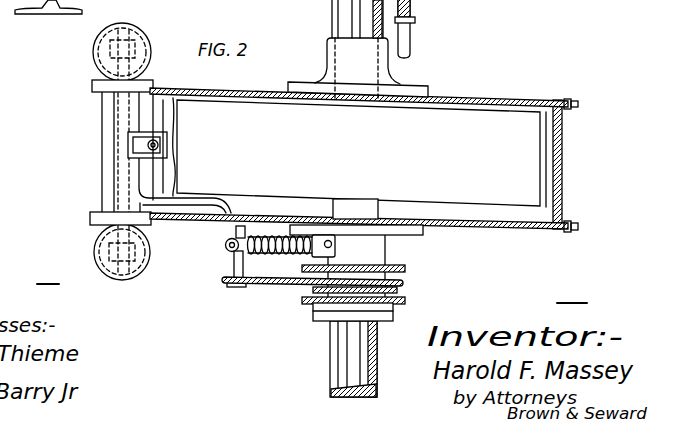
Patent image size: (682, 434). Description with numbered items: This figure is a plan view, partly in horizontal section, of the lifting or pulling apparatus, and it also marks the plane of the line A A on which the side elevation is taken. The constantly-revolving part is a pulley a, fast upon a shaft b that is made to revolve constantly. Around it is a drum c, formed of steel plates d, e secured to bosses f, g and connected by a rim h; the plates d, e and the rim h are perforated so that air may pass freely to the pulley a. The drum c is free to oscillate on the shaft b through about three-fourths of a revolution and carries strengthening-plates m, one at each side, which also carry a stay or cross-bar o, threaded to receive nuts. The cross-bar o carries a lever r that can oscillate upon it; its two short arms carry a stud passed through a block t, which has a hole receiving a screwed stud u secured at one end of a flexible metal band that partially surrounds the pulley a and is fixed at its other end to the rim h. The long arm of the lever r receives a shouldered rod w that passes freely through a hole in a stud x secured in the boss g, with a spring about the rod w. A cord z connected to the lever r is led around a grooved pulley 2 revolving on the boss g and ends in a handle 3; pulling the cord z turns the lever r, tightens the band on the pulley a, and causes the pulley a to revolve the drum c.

The stay or cross-bar o is at (116, 61).
The strengthening-plate m is at (90, 85).
The block t is at (127, 140).
The screwed stud u is at (112, 153).
The drum c is at (219, 91).
The steel plate d is at (499, 100).
The rim h is at (563, 164).
The steel plate e is at (474, 228).
The pulley a is at (361, 153).
The boss f is at (358, 69).
The shaft b is at (352, 198).
The handle 3 is at (410, 29).
The rod w is at (225, 244).
The lever r is at (232, 266).
The boss g is at (338, 250).
The grooved pulley 2 is at (321, 274).
The cord z is at (248, 287).
The stud x is at (313, 257).
The line A A is at (307, 297).